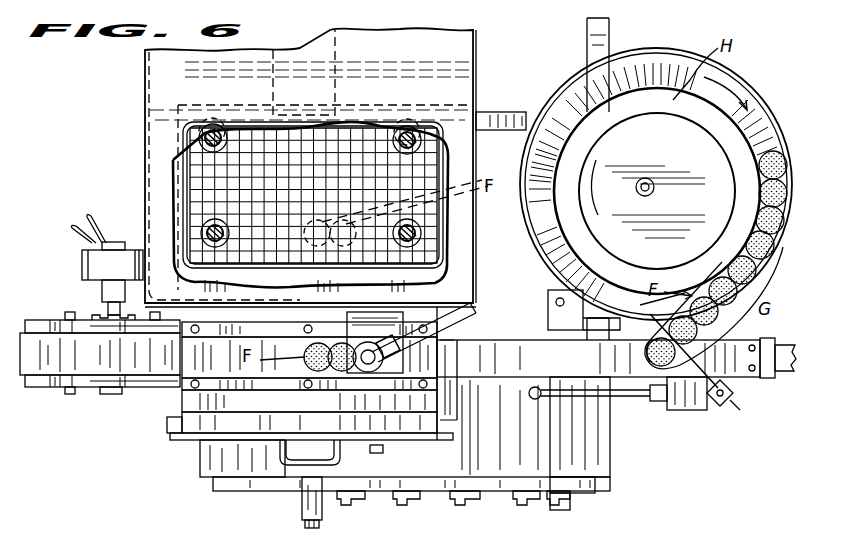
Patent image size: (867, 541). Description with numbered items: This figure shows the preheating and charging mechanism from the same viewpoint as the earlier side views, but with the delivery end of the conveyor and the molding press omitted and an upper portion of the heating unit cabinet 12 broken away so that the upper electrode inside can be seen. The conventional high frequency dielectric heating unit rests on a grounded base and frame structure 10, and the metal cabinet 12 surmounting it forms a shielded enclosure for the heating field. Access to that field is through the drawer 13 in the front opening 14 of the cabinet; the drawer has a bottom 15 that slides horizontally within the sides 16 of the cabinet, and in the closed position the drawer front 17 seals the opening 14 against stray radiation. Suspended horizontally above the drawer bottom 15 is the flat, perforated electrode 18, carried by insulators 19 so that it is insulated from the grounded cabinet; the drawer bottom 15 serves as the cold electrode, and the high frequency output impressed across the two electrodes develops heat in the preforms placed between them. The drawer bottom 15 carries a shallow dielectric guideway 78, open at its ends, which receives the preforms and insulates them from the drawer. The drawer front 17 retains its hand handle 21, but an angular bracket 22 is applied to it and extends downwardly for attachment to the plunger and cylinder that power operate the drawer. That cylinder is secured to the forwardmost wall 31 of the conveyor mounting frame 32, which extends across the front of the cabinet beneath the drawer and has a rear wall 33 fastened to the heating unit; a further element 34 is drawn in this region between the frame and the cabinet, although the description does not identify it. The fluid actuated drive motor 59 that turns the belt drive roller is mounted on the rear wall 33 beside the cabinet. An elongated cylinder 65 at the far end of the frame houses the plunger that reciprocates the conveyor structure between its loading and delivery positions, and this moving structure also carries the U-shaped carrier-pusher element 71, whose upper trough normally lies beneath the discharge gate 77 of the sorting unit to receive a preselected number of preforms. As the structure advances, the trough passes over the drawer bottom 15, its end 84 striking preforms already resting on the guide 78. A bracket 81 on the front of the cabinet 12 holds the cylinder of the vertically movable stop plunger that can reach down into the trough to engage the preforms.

The base and frame structure 10 is at (625, 38).
The cabinet 12 is at (458, 48).
The drawer 13 is at (185, 447).
The front opening 14 is at (445, 302).
The drawer bottom 15 is at (182, 418).
The sides of the cabinet 16 is at (145, 90).
The drawer front 17 is at (220, 440).
The electrode 18 is at (445, 165).
The insulators 19 is at (406, 136).
The handle 21 is at (302, 480).
The angular bracket 22 is at (305, 524).
The forwardmost wall 31 is at (58, 390).
The conveyor mounting frame 32 is at (49, 386).
The rear wall 33 is at (55, 320).
The pusher rod 34 is at (472, 312).
The drive motor 59 is at (82, 266).
The cylinder 65 is at (762, 380).
The carrier-pusher element 71 is at (563, 391).
The discharge gate 77 is at (708, 340).
The guideway 78 is at (186, 386).
The bracket 81 is at (400, 357).
The end of the trough 84 is at (445, 440).